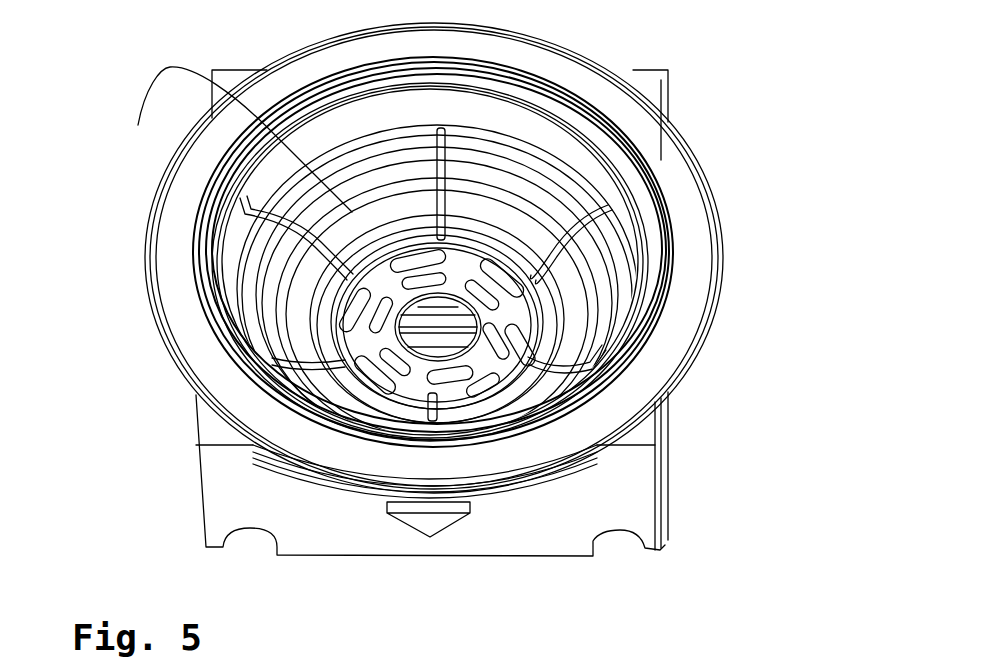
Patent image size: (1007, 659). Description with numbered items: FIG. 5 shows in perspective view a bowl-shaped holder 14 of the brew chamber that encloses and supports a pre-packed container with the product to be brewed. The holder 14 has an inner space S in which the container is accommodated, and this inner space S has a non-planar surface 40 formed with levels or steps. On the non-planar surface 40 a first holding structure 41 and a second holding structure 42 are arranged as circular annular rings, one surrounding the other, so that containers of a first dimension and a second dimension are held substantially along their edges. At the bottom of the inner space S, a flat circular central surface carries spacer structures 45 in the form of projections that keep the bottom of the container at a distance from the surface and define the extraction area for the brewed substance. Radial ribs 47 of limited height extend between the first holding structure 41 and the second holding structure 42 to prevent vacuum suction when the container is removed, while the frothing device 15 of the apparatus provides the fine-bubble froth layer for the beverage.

The holder 14 is at (802, 140).
The frothing device 15 is at (436, 328).
The non-planar surface 40 is at (536, 190).
The first holding structure 41 is at (578, 312).
The second holding structure 42 is at (592, 247).
The spacer structures 45 is at (392, 396).
The ribs 47 is at (357, 213).
The inner space S is at (225, 139).